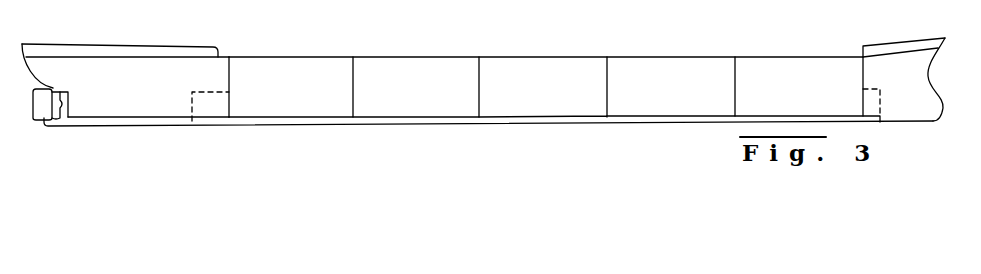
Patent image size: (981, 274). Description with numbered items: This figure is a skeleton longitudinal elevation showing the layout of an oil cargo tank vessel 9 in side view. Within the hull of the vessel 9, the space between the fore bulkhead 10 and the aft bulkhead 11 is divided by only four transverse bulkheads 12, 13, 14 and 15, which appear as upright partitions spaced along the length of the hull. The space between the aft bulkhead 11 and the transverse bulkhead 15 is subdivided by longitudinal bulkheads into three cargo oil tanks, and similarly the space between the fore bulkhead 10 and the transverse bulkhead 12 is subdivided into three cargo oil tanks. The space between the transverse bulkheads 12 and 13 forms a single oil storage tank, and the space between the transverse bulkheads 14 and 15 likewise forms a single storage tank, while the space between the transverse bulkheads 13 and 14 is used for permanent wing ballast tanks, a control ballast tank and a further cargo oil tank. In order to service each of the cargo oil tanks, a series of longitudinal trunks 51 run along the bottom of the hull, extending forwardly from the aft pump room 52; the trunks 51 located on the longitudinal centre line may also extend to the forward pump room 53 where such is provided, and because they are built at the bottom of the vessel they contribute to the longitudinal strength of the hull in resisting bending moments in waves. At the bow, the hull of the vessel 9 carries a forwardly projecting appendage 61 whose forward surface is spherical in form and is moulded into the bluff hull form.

The vessel 9 is at (291, 48).
The fore bulkhead 10 is at (863, 75).
The aft bulkhead 11 is at (229, 75).
The transverse bulkhead 12 is at (736, 76).
The transverse bulkhead 13 is at (608, 80).
The transverse bulkhead 14 is at (480, 80).
The transverse bulkhead 15 is at (354, 80).
The longitudinal trunk 51 is at (322, 118).
The aft pump room 52 is at (199, 94).
The forward pump room 53 is at (874, 93).
The appendage 61 is at (938, 106).